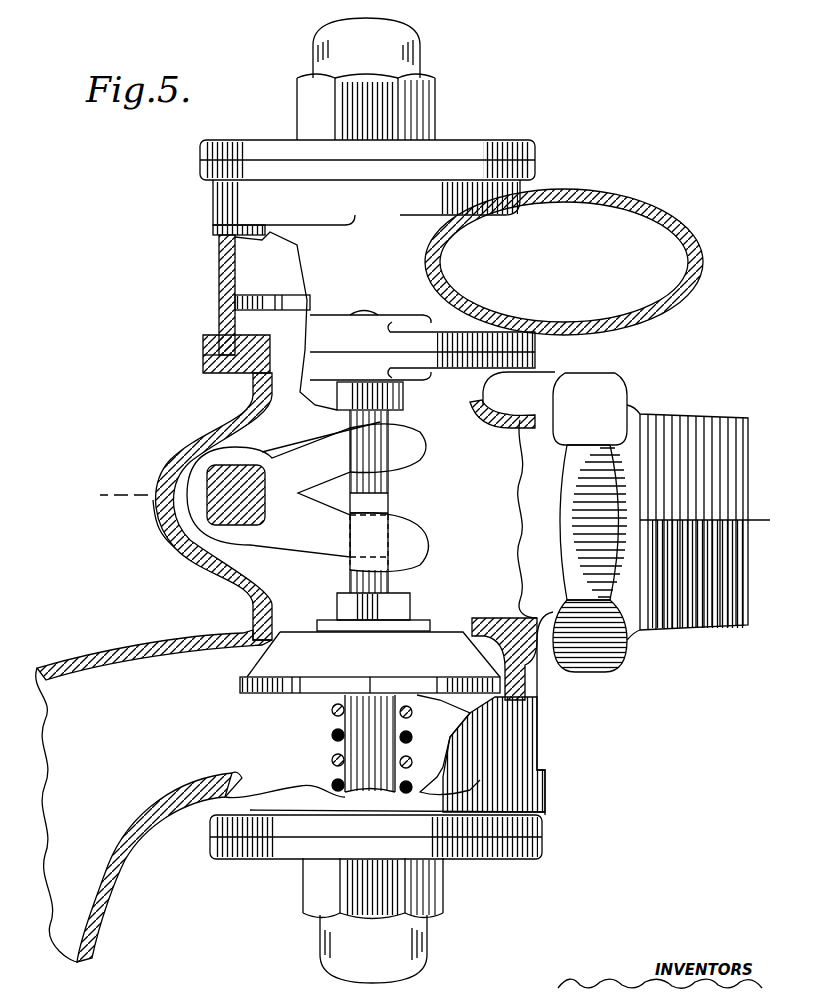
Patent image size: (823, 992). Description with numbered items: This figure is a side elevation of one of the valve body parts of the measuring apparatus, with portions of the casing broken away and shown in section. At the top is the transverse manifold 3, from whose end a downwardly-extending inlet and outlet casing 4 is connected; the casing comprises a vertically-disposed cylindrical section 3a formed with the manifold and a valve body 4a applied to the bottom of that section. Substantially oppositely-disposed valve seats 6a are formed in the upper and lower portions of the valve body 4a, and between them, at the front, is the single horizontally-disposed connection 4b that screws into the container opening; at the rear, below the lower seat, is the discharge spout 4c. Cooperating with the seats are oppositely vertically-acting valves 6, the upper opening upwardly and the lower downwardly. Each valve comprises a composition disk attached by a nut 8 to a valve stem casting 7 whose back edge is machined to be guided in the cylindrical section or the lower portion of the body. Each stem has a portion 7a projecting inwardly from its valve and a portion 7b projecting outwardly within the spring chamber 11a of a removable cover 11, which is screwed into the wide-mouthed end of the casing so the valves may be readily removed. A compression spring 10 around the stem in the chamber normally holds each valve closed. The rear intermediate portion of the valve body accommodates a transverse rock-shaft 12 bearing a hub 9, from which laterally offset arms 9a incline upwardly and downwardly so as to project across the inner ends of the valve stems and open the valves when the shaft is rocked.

The transverse manifold 3 is at (568, 190).
The cylindrical section 3a is at (222, 268).
The inlet and outlet casing 4 is at (172, 453).
The valve body 4a is at (173, 548).
The horizontally-disposed connection 4b is at (688, 630).
The discharge spout 4c is at (104, 872).
The valve 6 is at (238, 335).
The valve seat 6a is at (268, 355).
The valve stem casting 7 is at (262, 303).
The inwardly projecting stem portion 7a is at (328, 575).
The outwardly projecting stem portion 7b is at (368, 765).
The nut 8 is at (418, 592).
The hub 9 is at (190, 480).
The laterally offset arms 9a is at (410, 447).
The compression spring 10 is at (408, 748).
The removable cover 11 is at (468, 148).
The spring chamber 11a is at (290, 893).
The rock-shaft 12 is at (243, 528).